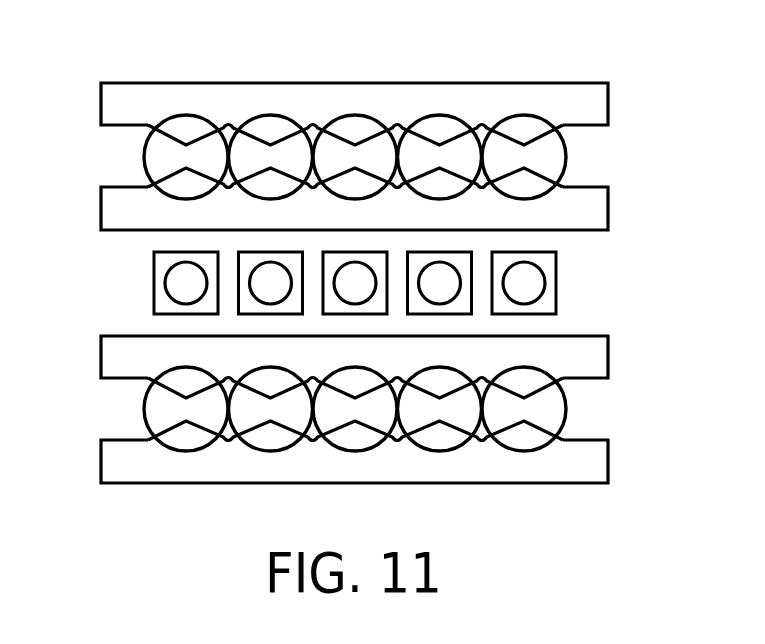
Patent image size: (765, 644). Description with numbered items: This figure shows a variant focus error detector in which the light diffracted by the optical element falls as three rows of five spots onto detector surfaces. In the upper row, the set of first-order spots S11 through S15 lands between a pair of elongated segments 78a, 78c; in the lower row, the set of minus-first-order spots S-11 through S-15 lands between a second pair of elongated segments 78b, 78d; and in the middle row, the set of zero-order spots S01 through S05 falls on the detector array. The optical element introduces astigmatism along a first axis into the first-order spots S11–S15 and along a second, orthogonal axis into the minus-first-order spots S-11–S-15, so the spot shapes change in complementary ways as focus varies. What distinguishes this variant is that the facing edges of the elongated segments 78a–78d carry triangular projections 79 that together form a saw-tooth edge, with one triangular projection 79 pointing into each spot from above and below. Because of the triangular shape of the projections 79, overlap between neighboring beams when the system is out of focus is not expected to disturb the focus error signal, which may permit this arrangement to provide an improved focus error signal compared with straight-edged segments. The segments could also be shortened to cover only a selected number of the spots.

The elongated segment 78a is at (598, 105).
The elongated segment 78b is at (598, 358).
The elongated segment 78c is at (598, 210).
The elongated segment 78d is at (592, 462).
The triangular projections 79 is at (272, 135).
The order 1 spot S11 is at (165, 153).
The order 1 spot S15 is at (557, 157).
The order −1 spot S-11 is at (143, 412).
The order −1 spot S-15 is at (563, 410).
The order 0 spot S01 is at (177, 282).
The order 0 spot S05 is at (523, 283).